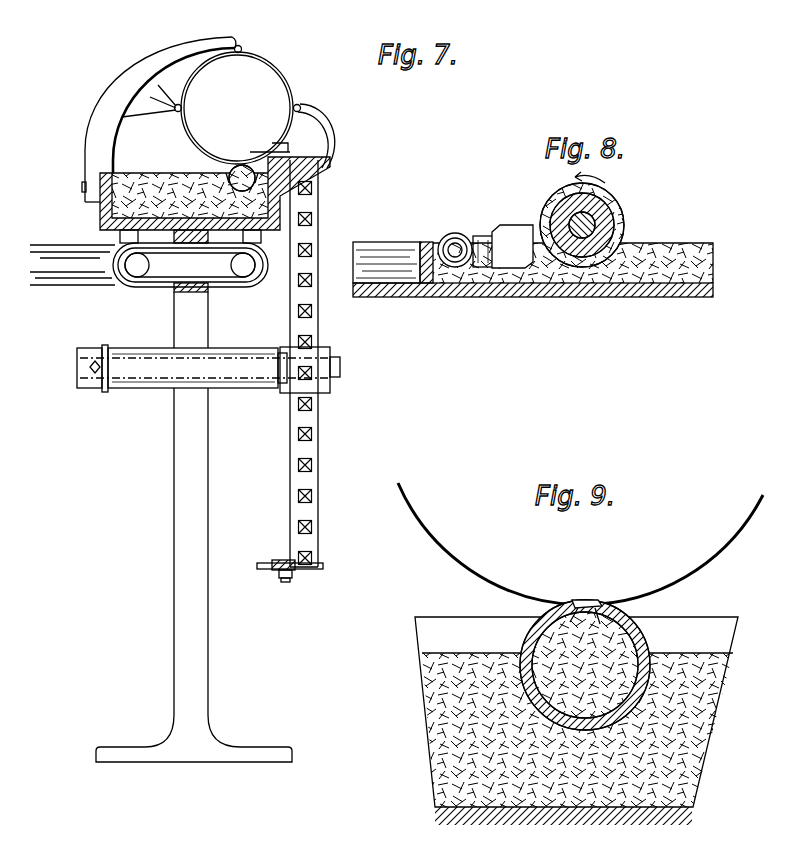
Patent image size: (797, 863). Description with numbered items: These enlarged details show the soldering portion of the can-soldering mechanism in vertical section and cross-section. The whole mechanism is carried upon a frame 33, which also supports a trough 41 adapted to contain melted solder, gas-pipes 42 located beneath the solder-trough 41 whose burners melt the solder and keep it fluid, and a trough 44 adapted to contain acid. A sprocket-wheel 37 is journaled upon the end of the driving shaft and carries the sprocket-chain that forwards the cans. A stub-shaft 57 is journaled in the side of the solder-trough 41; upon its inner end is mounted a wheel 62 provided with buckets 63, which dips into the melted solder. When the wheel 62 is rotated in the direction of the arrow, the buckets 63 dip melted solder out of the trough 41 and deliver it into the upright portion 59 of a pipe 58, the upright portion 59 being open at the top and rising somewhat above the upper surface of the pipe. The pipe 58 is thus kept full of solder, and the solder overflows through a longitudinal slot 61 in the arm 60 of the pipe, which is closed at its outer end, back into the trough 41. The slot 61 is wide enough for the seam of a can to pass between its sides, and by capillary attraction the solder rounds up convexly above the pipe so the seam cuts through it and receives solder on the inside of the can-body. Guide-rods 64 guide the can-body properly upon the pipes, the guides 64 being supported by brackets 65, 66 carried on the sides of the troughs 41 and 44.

In FIG. 7, the frame 33 is at (194, 527).
In FIG. 7, the sprocket-wheel 37 is at (320, 413).
In FIG. 7, the solder-trough 41 is at (99, 207).
In FIG. 8, the solder-trough 41 is at (608, 288).
In FIG. 9, the solder-trough 41 is at (630, 810).
In FIG. 7, the gas-pipes 42 is at (85, 268).
In FIG. 8, the acid-trough 44 is at (374, 288).
In FIG. 8, the stub-shaft 57 is at (602, 216).
In FIG. 8, the pipe 58 is at (459, 240).
In FIG. 8, the upright portion 59 is at (512, 246).
In FIG. 9, the arm 60 is at (648, 641).
In FIG. 9, the longitudinal slot 61 is at (552, 628).
In FIG. 8, the wheel 62 is at (588, 210).
In FIG. 8, the buckets 63 is at (572, 192).
In FIG. 7, the guide-rods 64 is at (241, 49).
In FIG. 7, the bracket 65 is at (187, 48).
In FIG. 7, the bracket 66 is at (326, 126).